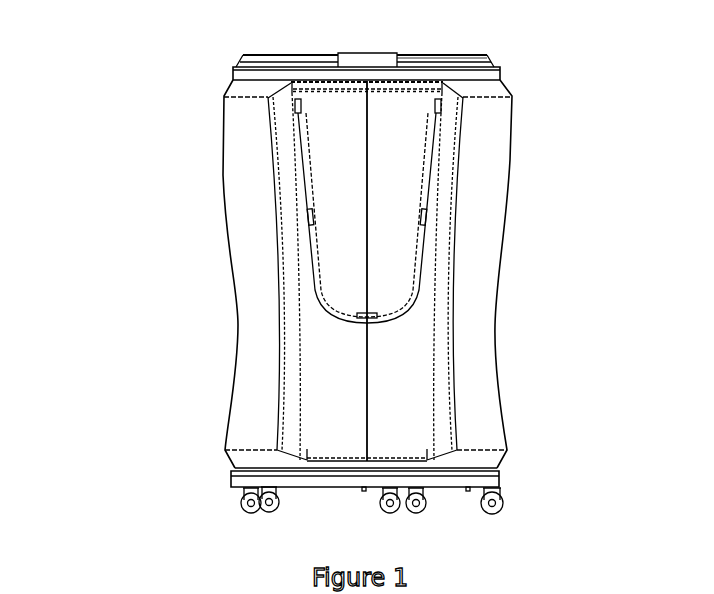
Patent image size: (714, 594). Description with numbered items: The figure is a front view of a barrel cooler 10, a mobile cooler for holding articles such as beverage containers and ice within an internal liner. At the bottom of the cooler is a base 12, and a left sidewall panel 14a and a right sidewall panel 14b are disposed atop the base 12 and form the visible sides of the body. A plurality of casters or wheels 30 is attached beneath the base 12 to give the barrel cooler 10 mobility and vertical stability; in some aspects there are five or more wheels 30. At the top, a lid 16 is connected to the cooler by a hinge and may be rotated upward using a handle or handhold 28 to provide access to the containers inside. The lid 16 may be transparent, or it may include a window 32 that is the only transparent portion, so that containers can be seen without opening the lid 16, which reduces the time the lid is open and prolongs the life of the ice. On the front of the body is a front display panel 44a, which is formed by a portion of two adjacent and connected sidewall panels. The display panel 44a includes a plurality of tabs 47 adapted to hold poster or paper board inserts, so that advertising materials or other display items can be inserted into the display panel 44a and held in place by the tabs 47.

The barrel cooler 10 is at (313, 274).
The base 12 is at (232, 474).
The left sidewall panel 14a is at (222, 177).
The right sidewall panel 14b is at (497, 283).
The lid 16 is at (238, 62).
The handle or handhold 28 is at (390, 65).
The casters or wheels 30 is at (503, 495).
The window 32 is at (343, 53).
The front display panel 44a is at (340, 258).
The tabs 47 is at (428, 217).